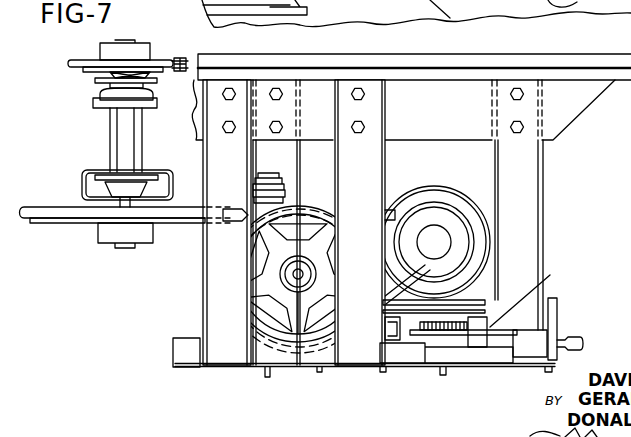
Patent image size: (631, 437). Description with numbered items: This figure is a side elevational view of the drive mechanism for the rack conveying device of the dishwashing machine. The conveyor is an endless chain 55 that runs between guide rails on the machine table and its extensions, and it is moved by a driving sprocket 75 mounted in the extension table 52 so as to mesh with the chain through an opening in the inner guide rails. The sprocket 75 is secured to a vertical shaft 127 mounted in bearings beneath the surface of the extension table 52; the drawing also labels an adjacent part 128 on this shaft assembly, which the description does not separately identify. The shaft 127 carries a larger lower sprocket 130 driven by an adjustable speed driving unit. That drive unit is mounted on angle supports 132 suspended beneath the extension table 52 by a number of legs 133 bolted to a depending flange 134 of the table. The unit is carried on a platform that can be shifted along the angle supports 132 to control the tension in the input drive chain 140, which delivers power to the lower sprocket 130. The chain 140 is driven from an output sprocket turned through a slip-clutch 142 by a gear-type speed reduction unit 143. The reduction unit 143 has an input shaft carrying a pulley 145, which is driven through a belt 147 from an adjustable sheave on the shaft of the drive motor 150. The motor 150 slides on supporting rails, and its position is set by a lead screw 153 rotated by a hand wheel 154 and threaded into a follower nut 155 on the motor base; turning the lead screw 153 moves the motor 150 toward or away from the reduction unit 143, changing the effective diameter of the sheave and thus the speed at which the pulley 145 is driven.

The extension table 52 is at (584, 49).
The endless chain 55 is at (180, 57).
The driving sprocket 75 is at (78, 61).
The vertical shaft 127 is at (127, 145).
The bearing housing 128 is at (108, 97).
The lower sprocket 130 is at (46, 225).
The angle supports 132 is at (293, 360).
The legs 133 is at (352, 88).
The depending flange 134 is at (430, 129).
The input drive chain 140 is at (181, 225).
The slip-clutch 142 is at (276, 171).
The speed reduction unit 143 is at (260, 300).
The pulley 145 is at (327, 323).
The belt 147 is at (395, 213).
The drive motor 150 is at (485, 237).
The lead screw 153 is at (452, 332).
The hand wheel 154 is at (558, 313).
The follower nut 155 is at (536, 294).